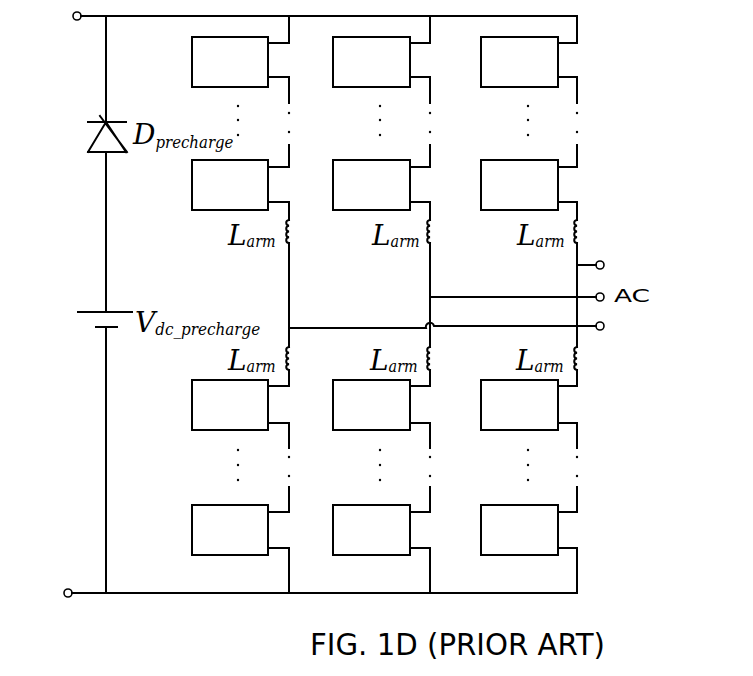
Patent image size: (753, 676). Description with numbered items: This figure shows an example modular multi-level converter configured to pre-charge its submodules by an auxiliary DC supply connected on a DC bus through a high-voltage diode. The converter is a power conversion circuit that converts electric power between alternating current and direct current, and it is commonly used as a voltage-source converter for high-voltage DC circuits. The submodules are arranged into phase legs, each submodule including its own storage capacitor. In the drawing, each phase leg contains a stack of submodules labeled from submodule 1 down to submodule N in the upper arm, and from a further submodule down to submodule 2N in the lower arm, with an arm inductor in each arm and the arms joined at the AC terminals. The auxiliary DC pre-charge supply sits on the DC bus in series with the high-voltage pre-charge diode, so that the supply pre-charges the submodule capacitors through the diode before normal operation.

The first submodule SM1 of each converter arm 1 is at (375, 62).
The N-th submodule SMN of each upper arm N is at (375, 185).
The 2N-th submodule SM2N of each lower arm 2N is at (375, 530).